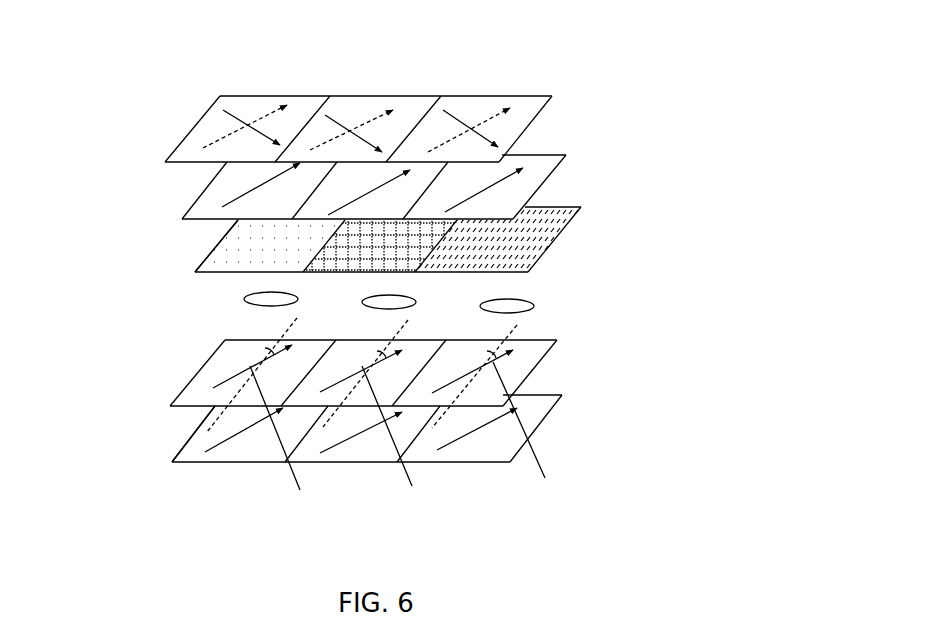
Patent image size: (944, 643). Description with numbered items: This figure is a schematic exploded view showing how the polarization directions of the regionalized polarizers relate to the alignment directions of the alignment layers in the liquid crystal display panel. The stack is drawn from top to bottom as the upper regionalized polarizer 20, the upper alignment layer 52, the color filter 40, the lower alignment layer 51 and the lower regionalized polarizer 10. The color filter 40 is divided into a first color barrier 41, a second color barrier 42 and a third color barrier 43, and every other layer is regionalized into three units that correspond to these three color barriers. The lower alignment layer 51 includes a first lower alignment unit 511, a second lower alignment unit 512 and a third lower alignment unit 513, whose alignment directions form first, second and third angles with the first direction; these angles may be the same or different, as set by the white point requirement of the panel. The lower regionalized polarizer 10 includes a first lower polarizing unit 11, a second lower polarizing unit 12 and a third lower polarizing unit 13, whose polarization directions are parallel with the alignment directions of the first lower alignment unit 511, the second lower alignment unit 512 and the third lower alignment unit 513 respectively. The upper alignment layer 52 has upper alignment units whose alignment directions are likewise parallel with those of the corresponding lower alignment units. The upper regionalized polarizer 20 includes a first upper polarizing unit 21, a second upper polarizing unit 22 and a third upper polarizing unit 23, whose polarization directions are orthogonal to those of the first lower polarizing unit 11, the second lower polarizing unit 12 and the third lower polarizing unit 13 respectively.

The upper regionalized polarizer 20 is at (193, 100).
The first upper polarizing unit 21 is at (273, 103).
The second upper polarizing unit 22 is at (400, 103).
The third upper polarizing unit 23 is at (515, 100).
The upper alignment layer 52 is at (227, 192).
The color filter 40 is at (243, 248).
The first color barrier 41 is at (225, 260).
The second color barrier 42 is at (400, 258).
The third color barrier 43 is at (515, 262).
The lower alignment layer 51 is at (213, 388).
The first lower alignment unit 511 is at (292, 439).
The second lower alignment unit 512 is at (404, 440).
The third lower alignment unit 513 is at (536, 434).
The lower regionalized polarizer 10 is at (223, 450).
The first lower polarizing unit 11 is at (243, 440).
The second lower polarizing unit 12 is at (362, 440).
The third lower polarizing unit 13 is at (490, 428).